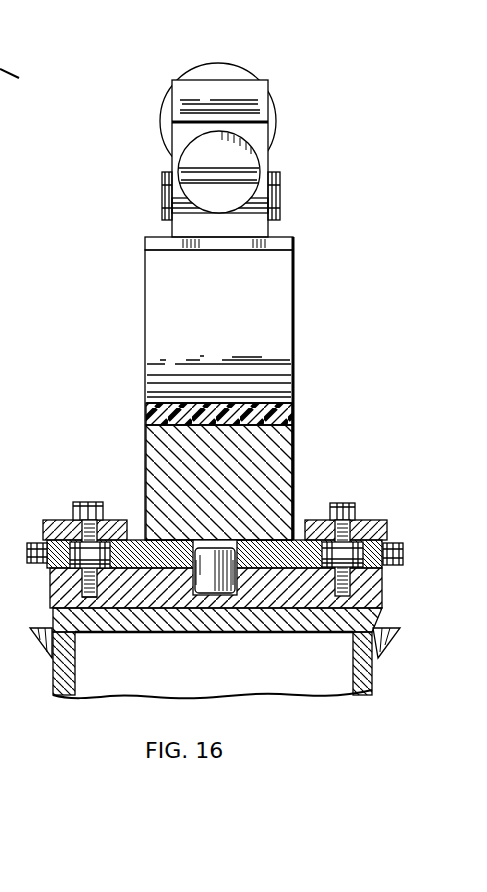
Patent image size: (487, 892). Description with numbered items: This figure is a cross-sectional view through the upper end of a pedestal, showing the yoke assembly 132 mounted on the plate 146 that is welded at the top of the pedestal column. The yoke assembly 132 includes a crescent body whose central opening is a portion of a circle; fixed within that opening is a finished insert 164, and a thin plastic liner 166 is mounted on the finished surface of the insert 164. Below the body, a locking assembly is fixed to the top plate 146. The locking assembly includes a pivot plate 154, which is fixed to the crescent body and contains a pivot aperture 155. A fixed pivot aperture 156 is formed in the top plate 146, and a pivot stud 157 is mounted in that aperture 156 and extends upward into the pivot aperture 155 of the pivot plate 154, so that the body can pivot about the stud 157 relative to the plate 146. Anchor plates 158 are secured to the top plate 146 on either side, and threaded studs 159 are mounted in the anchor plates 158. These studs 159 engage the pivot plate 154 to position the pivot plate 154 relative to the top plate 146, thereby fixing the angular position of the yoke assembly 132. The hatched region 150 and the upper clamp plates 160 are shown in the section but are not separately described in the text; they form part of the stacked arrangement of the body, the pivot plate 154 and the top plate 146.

The yoke assembly 132 is at (303, 271).
The plate 146 is at (373, 597).
The cylinder body 150 is at (280, 450).
The pivot plate 154 is at (257, 538).
The pivot aperture 155 is at (208, 543).
The fixed pivot aperture 156 is at (232, 578).
The pivot stud 157 is at (200, 578).
The anchor plates 158 is at (368, 548).
The threaded studs 159 is at (400, 543).
The clamp plate 160 is at (133, 542).
The finished insert 164 is at (280, 420).
The thin plastic liner 166 is at (280, 382).